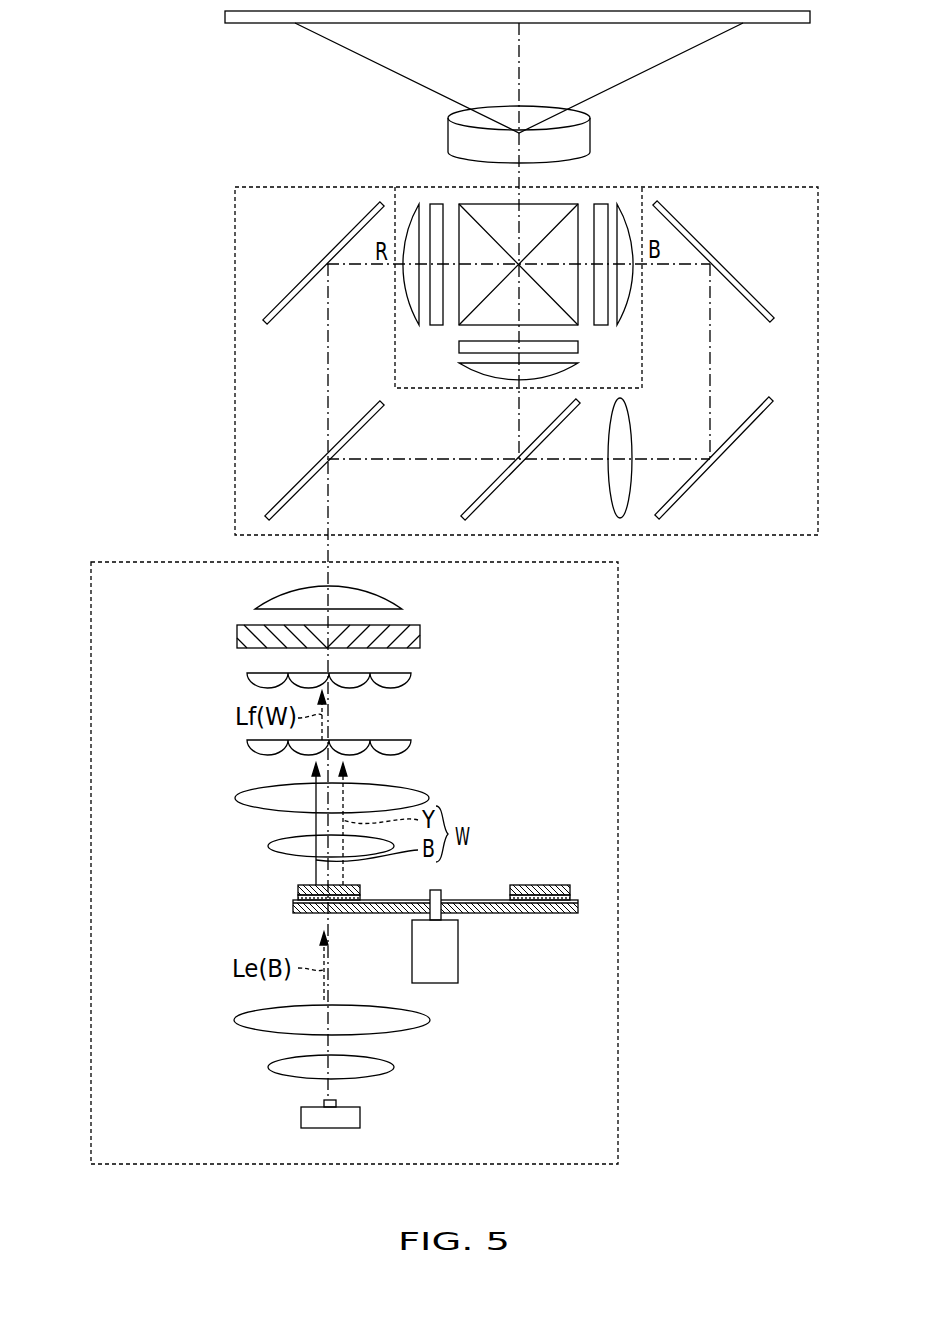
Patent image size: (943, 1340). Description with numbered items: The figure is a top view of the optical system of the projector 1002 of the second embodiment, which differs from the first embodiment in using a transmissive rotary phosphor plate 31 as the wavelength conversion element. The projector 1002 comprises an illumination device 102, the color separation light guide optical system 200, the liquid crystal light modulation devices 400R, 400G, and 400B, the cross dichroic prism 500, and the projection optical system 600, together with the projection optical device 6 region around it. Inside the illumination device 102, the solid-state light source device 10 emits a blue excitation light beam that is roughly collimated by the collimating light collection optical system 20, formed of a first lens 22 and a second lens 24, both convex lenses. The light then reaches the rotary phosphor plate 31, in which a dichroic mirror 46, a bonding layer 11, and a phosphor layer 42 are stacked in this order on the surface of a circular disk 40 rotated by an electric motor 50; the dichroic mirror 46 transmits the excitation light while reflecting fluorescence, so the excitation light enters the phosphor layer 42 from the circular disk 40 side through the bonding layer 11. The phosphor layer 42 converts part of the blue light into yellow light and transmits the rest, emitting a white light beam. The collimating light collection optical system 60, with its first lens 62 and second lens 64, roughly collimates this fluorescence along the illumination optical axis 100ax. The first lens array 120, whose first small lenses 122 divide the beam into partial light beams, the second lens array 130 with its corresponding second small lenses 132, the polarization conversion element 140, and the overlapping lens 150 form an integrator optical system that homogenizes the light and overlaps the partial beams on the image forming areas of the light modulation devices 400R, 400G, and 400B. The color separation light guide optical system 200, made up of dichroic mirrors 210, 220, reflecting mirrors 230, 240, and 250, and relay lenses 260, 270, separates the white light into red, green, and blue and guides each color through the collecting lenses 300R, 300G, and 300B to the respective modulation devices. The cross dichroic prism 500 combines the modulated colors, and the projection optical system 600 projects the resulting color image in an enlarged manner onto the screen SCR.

The projector 1002 is at (186, 104).
The screen SCR is at (783, 23).
The projection optical device 6 is at (500, 113).
The projection optical system 600 is at (448, 135).
The cross dichroic prism 500 is at (568, 207).
The liquid crystal light modulation device 400R is at (436, 204).
The liquid crystal light modulation device 400G is at (459, 347).
The liquid crystal light modulation device 400B is at (602, 204).
The collecting lens 300R is at (412, 204).
The collecting lens 300G is at (463, 368).
The collecting lens 300B is at (622, 204).
The color separation light guide optical system 200 is at (760, 536).
The dichroic mirror 210 is at (290, 490).
The dichroic mirror 220 is at (500, 487).
The reflecting mirror 230 is at (268, 310).
The reflecting mirror 240 is at (733, 445).
The reflecting mirror 250 is at (770, 312).
The relay lens 260 is at (607, 478).
The relay lens 270 is at (737, 349).
The illumination device 102 is at (619, 1118).
The illumination optical axis 100ax is at (327, 548).
The overlapping lens 150 is at (398, 596).
The polarization conversion element 140 is at (410, 627).
The second lens array 130 is at (410, 680).
The second small lens 132 is at (257, 685).
The first lens array 120 is at (410, 748).
The first small lens 122 is at (257, 752).
The collimating light collection optical system 60 is at (153, 780).
The second lens 64 is at (240, 798).
The first lens 62 is at (270, 846).
The rotary phosphor plate 31 is at (499, 846).
The phosphor layer 42 is at (298, 886).
The bonding layer 11 is at (298, 897).
The dichroic mirror 46 is at (293, 902).
The circular disk 40 is at (293, 910).
The electric motor 50 is at (458, 960).
The collimating light collection optical system 20 is at (153, 1000).
The second lens 24 is at (235, 1018).
The first lens 22 is at (270, 1067).
The solid-state light source device 10 is at (380, 1106).